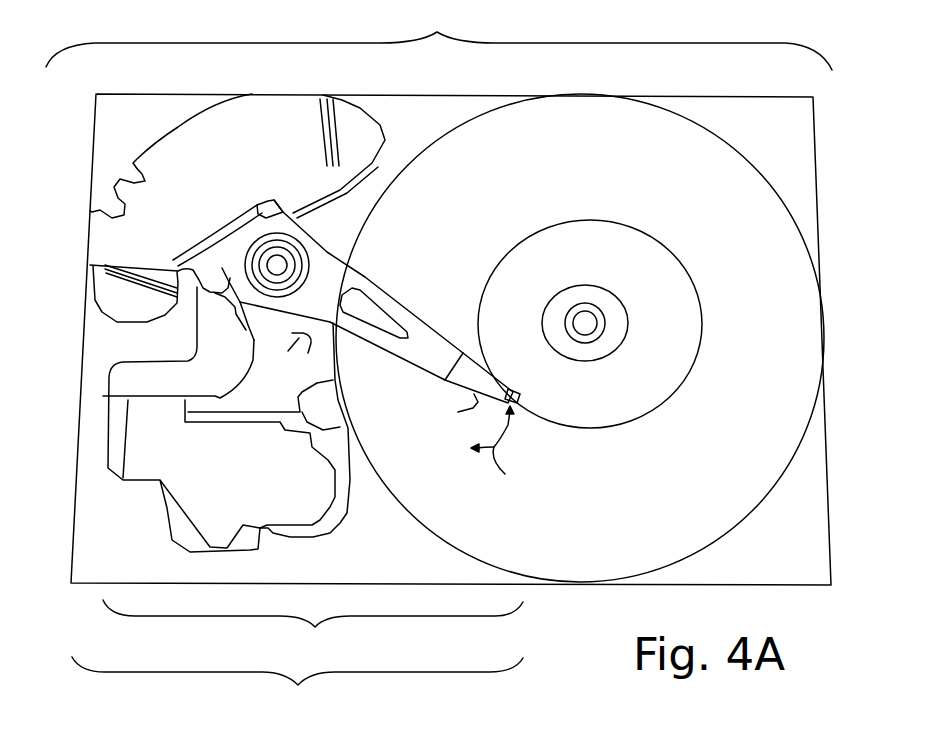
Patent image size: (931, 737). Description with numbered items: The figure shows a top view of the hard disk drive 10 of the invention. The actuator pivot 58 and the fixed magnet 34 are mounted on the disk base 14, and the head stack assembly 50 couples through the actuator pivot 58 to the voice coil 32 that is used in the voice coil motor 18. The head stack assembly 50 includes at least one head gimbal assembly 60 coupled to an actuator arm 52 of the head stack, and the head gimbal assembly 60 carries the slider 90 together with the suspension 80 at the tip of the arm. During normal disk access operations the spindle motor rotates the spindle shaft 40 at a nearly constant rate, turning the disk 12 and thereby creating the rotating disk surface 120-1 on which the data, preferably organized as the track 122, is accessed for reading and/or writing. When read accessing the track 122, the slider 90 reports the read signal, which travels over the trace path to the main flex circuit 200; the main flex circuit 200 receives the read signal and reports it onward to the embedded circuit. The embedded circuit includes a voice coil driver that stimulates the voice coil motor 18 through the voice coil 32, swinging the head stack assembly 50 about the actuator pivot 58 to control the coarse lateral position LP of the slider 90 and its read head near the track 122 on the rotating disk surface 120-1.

The hard disk drive 10 is at (439, 36).
The disk base 14 is at (91, 157).
The fixed magnet 34 is at (220, 153).
The voice coil 32 is at (272, 204).
The actuator pivot 58 is at (277, 265).
The actuator arm 52 is at (351, 290).
The suspension 80 is at (531, 409).
The slider 90 is at (518, 408).
The head gimbal assembly 60 is at (449, 412).
The main flex circuit 200 is at (305, 358).
The lateral position LP is at (498, 452).
The disk 12 is at (580, 338).
The rotating disk surface 120-1 is at (660, 163).
The track 122 is at (703, 308).
The spindle shaft 40 is at (583, 322).
The head stack assembly 50 is at (313, 632).
The voice coil motor 18 is at (297, 690).